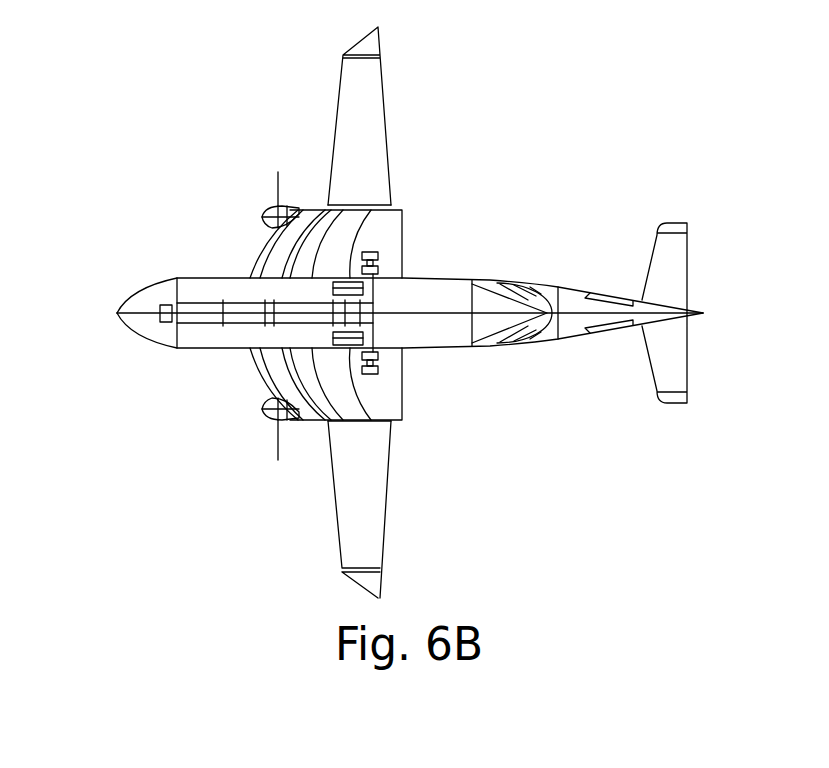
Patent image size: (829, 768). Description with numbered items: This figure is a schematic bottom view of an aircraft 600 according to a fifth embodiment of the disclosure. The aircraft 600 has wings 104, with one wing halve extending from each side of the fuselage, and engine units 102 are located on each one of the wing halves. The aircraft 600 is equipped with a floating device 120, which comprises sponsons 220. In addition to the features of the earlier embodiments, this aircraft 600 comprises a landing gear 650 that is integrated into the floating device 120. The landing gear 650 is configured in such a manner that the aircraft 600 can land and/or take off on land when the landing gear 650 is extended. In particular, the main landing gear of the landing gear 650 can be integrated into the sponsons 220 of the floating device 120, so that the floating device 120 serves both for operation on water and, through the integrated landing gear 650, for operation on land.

The aircraft 600 is at (374, 312).
The wings 104 is at (331, 97).
The floating device 120 is at (427, 268).
The sponsons 220 is at (253, 360).
The engine units 102 is at (262, 408).
The landing gear 650 is at (372, 252).